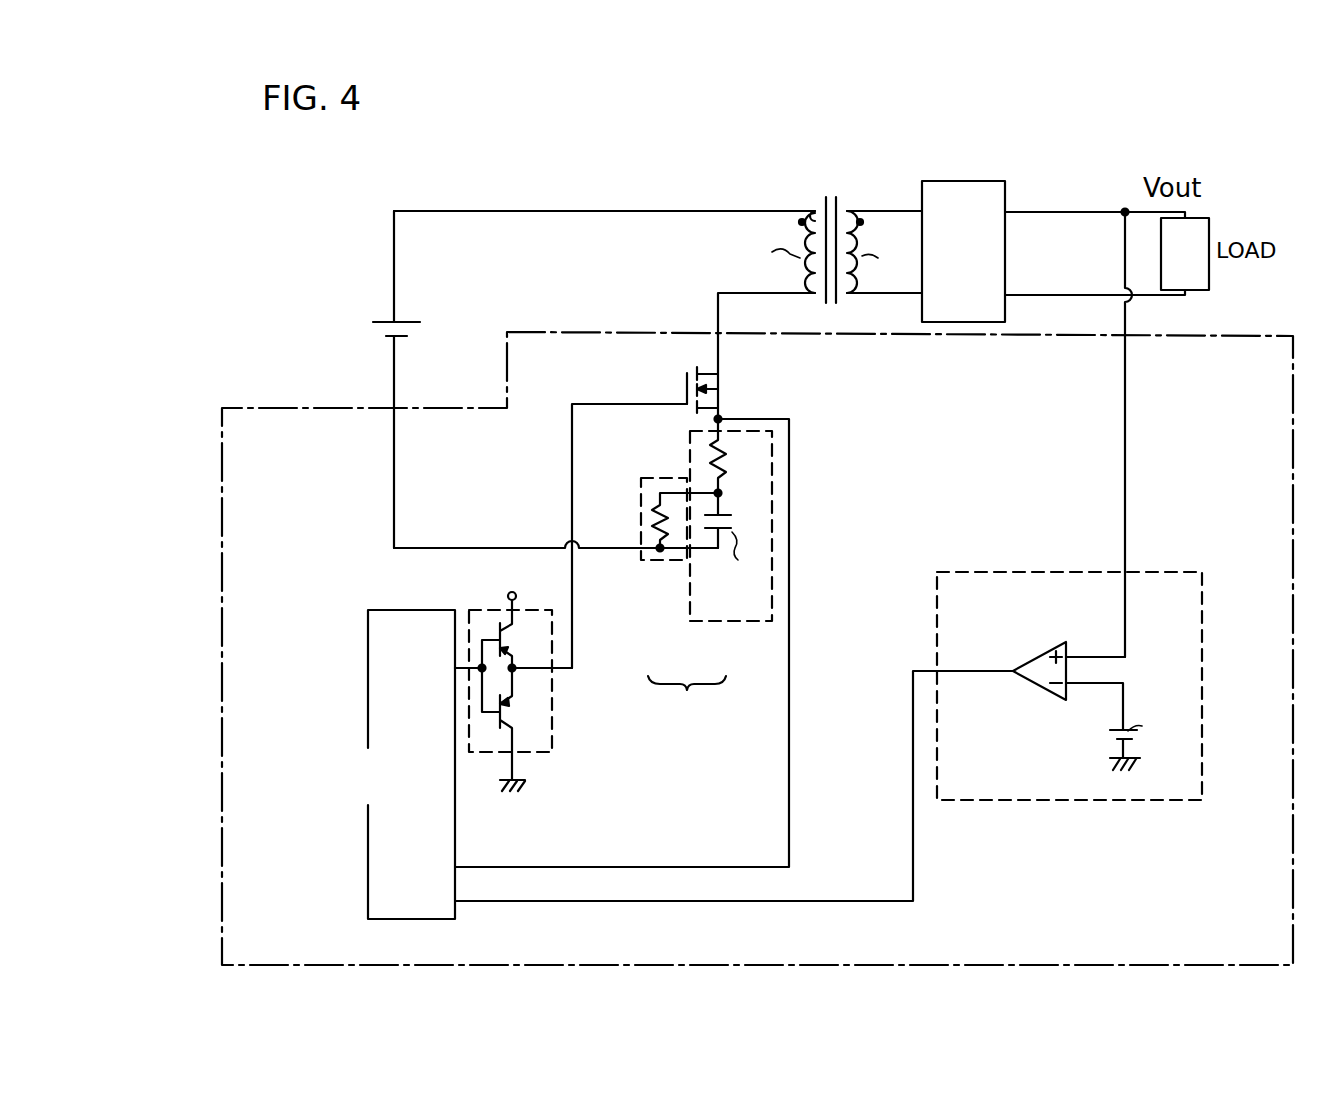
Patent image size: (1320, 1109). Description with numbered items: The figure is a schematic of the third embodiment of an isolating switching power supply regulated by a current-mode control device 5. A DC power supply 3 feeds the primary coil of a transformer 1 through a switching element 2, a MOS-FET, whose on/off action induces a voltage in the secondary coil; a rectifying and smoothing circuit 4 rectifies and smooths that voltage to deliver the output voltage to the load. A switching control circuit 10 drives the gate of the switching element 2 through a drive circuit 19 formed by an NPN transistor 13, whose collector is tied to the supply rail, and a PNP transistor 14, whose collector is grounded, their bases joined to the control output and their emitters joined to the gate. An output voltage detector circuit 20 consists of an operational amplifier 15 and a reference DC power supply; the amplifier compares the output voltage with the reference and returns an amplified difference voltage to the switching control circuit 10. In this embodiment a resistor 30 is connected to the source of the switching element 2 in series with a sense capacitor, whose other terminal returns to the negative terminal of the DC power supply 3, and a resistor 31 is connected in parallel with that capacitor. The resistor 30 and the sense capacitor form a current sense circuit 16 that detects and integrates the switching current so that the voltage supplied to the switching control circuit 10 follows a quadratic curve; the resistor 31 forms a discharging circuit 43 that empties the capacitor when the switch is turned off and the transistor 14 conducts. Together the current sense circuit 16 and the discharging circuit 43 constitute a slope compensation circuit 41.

The transformer 1 is at (836, 191).
The switching element 2 is at (686, 389).
The DC power supply 3 is at (415, 318).
The rectifying and smoothing circuit 4 is at (1005, 197).
The current-mode control device 5 is at (1190, 338).
The switching control circuit 10 is at (368, 733).
The NPN transistor 13 is at (516, 641).
The PNP transistor 14 is at (516, 716).
The operational amplifier 15 is at (1050, 657).
The current sense circuit 16 is at (731, 547).
The drive circuit 19 is at (534, 676).
The output voltage detector circuit 20 is at (1069, 659).
The resistor 30 is at (724, 458).
The resistor 31 is at (650, 522).
The slope compensation circuit 41 is at (687, 702).
The discharging circuit 43 is at (660, 576).